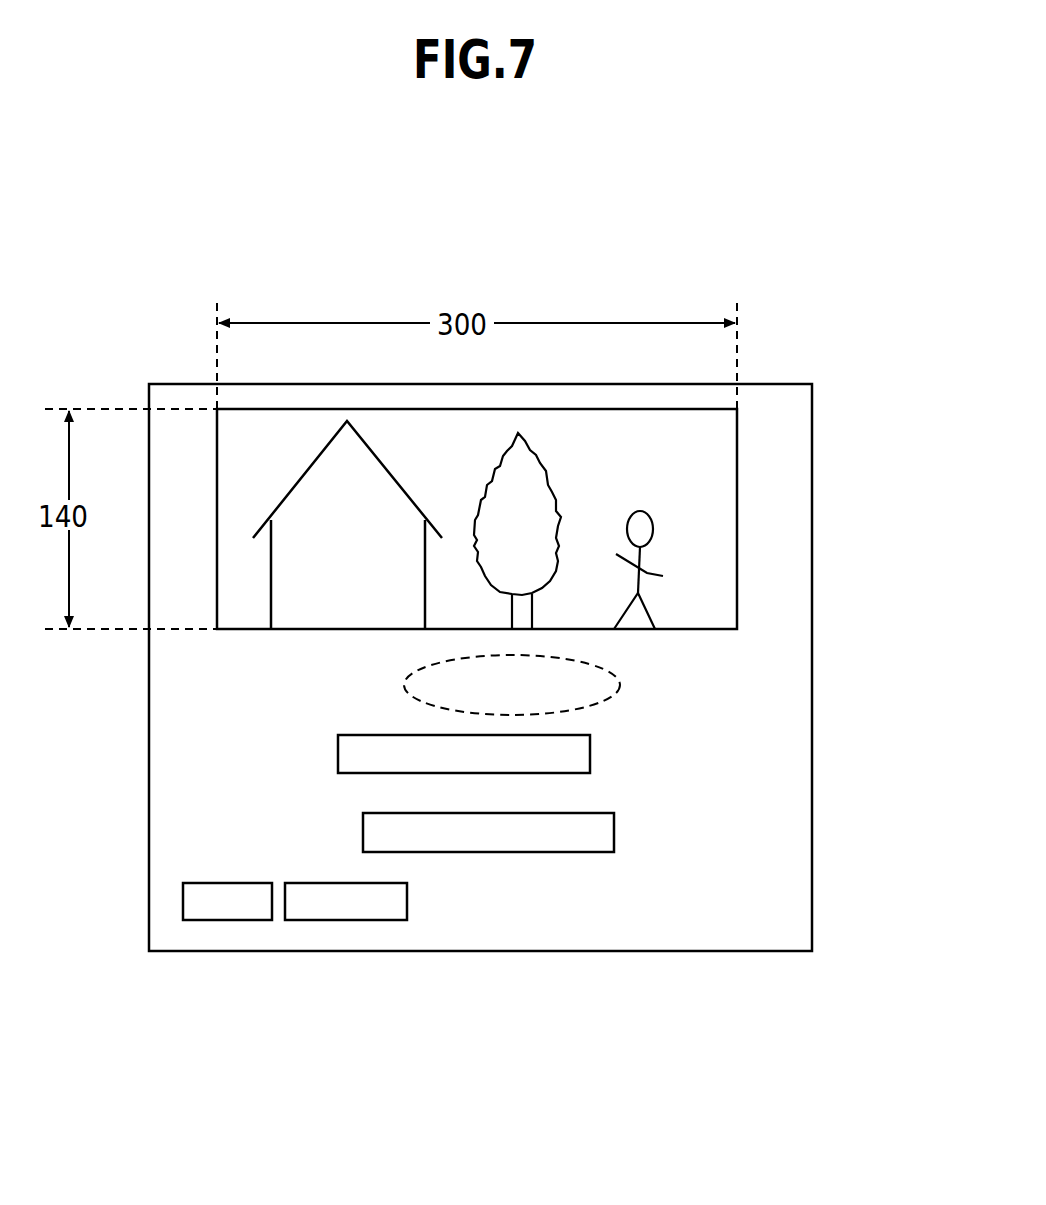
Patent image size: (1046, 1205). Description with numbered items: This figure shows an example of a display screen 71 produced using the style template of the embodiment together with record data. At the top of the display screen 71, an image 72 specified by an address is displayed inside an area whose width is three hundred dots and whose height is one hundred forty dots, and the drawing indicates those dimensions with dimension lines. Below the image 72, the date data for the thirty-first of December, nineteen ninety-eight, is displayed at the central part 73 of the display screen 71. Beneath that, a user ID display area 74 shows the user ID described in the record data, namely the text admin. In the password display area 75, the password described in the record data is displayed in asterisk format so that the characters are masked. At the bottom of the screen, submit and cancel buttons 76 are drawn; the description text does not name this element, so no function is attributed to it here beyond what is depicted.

The display screen 71 is at (822, 427).
The image 72 is at (722, 527).
The central part 73 is at (615, 680).
The user ID display area 74 is at (602, 750).
The password display area 75 is at (624, 828).
The submit and cancel buttons 76 is at (419, 901).